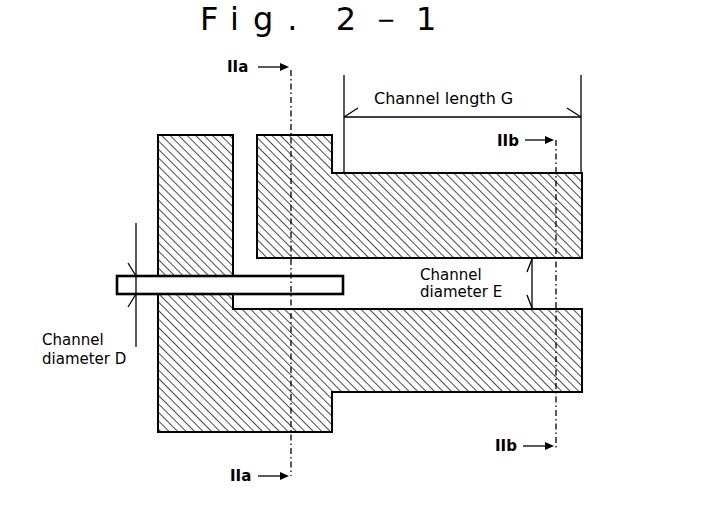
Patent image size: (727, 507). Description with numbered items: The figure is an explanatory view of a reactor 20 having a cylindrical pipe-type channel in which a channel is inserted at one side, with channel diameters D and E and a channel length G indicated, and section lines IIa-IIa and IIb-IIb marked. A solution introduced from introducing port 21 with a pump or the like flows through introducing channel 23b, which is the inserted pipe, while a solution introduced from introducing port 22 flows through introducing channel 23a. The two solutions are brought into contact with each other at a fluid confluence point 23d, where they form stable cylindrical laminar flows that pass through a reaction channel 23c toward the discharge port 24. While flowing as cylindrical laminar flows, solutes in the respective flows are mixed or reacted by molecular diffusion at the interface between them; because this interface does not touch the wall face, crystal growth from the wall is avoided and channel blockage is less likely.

The reactor 20 is at (583, 205).
The introducing port 21 is at (117, 284).
The introducing port 22 is at (247, 135).
The introducing channel 23a is at (243, 178).
The introducing channel 23b is at (238, 282).
The reaction channel 23c is at (402, 293).
The fluid confluence point 23d is at (343, 282).
The discharge port 24 is at (578, 285).